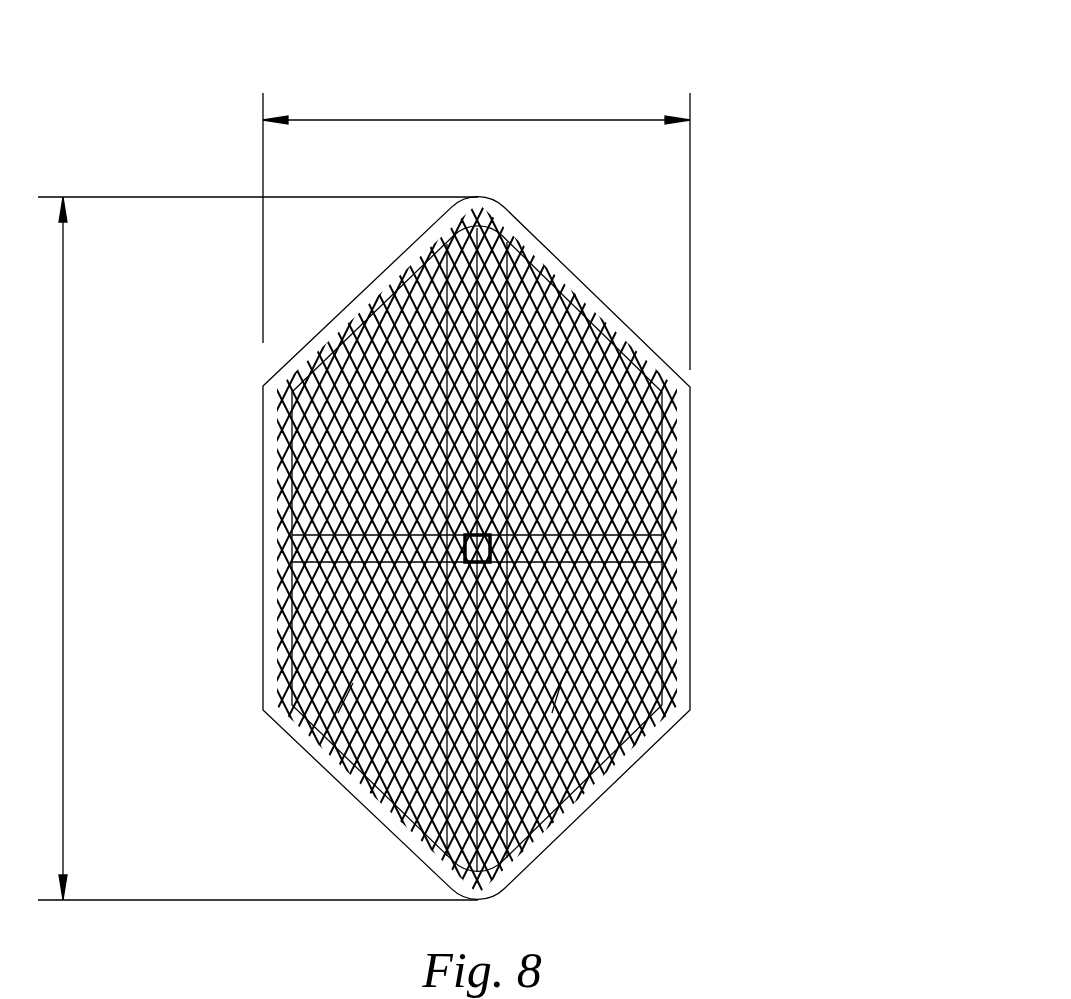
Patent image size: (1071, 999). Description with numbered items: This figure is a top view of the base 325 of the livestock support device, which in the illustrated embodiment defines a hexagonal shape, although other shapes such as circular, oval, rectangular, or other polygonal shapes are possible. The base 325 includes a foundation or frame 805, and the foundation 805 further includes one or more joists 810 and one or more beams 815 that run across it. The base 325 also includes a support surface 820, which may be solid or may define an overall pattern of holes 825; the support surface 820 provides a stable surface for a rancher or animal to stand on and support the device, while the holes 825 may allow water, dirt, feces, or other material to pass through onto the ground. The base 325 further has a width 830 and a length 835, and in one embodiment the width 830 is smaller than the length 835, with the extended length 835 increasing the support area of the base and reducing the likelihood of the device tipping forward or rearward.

The base 325 is at (796, 168).
The foundation or frame 805 is at (603, 297).
The joist 810 is at (608, 557).
The beam 815 is at (445, 383).
The support surface 820 is at (598, 478).
The holes 825 is at (353, 683).
The width 830 is at (465, 117).
The length 835 is at (63, 565).